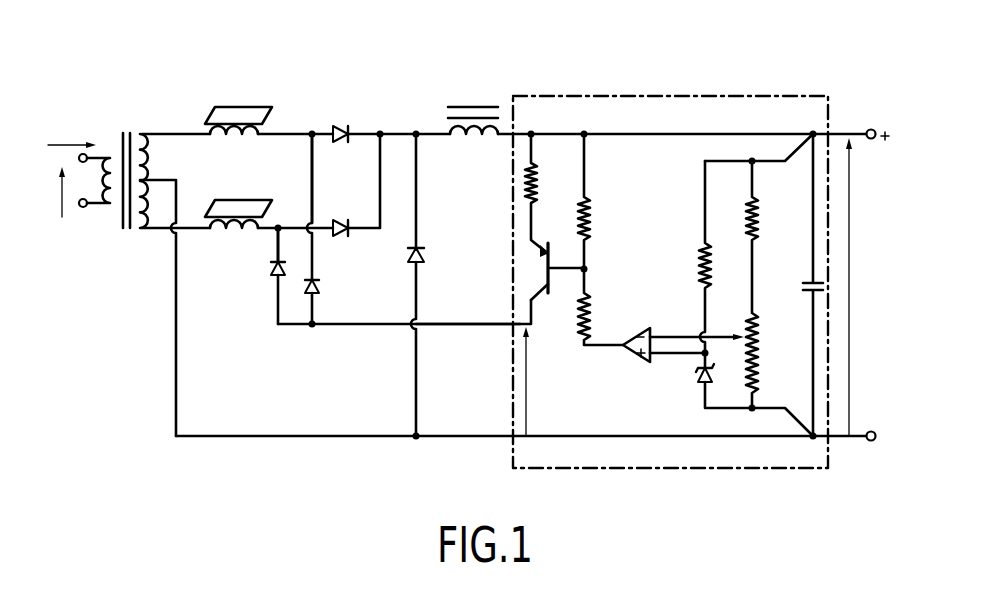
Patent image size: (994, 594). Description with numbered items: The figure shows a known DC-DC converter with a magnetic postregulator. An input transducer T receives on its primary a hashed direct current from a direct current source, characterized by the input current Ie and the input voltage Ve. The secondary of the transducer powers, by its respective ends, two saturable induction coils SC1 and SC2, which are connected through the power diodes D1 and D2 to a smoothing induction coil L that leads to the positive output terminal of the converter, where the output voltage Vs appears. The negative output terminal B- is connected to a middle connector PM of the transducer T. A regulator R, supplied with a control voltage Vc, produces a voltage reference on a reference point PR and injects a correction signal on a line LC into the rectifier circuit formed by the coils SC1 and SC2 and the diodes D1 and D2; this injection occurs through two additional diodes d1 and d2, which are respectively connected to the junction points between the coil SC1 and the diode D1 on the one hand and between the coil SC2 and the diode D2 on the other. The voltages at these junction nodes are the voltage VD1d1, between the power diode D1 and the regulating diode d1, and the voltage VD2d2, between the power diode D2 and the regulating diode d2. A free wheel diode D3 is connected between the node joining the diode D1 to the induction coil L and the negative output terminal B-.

The input transducer T is at (130, 96).
The middle connector PM is at (147, 180).
The input current Ie is at (69, 130).
The input voltage Ve is at (62, 218).
The saturable induction coil SC1 is at (275, 106).
The saturable induction coil SC2 is at (275, 201).
The voltage on the node between power diode D1 and regulating diode d1 VD1d1 is at (314, 132).
The diode D1 is at (341, 133).
The diode D2 is at (341, 224).
The voltage on the node between power diode D2 and regulating diode d2 VD2d2 is at (277, 230).
The additional diode d2 is at (273, 271).
The additional diode d1 is at (320, 285).
The free wheel diode D3 is at (425, 257).
The smoothing induction coil L is at (479, 70).
The line LC is at (474, 327).
The regulator R is at (648, 96).
The reference point PR is at (703, 357).
The control voltage Vc is at (537, 381).
The output voltage Vs is at (863, 287).
The negative output terminal B- is at (873, 440).